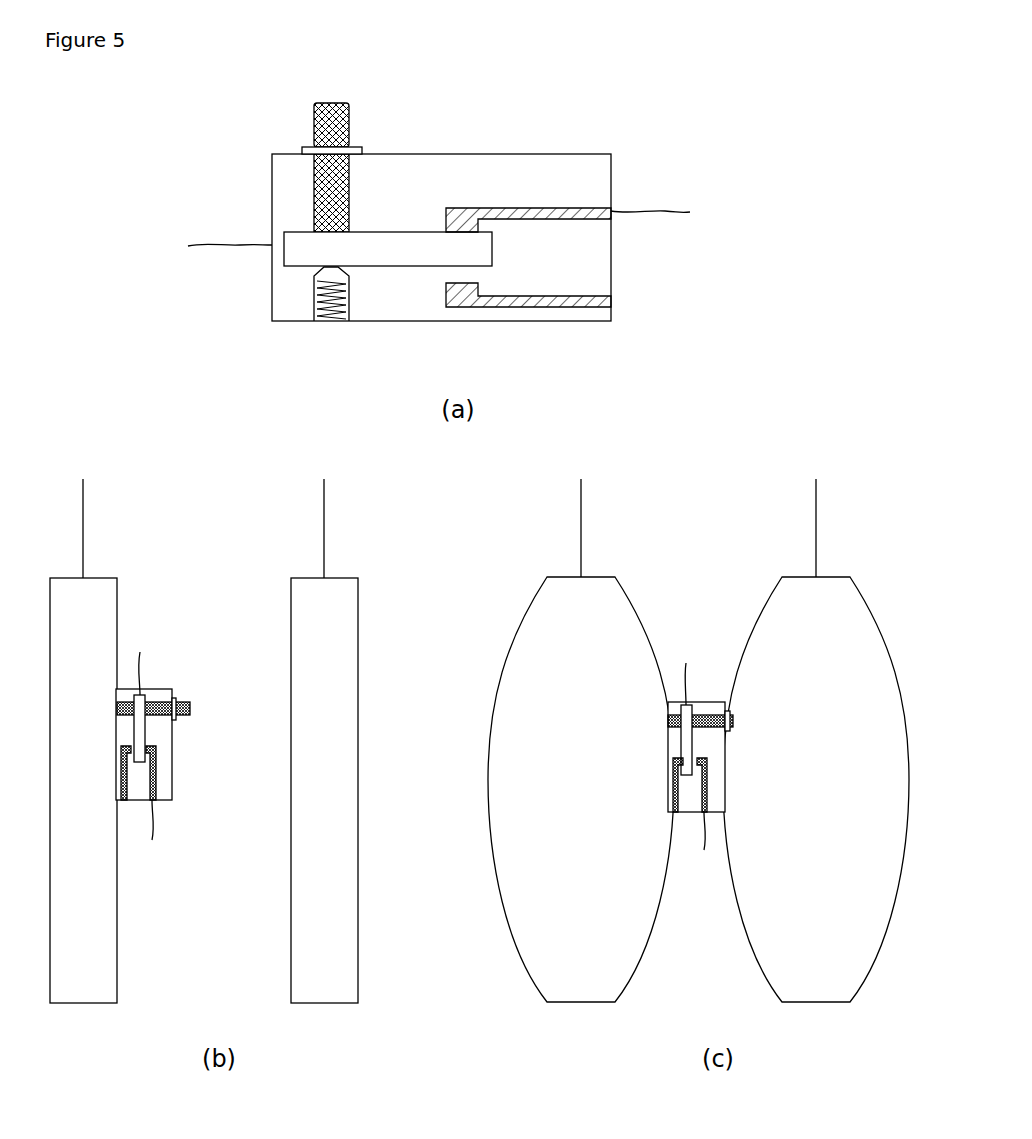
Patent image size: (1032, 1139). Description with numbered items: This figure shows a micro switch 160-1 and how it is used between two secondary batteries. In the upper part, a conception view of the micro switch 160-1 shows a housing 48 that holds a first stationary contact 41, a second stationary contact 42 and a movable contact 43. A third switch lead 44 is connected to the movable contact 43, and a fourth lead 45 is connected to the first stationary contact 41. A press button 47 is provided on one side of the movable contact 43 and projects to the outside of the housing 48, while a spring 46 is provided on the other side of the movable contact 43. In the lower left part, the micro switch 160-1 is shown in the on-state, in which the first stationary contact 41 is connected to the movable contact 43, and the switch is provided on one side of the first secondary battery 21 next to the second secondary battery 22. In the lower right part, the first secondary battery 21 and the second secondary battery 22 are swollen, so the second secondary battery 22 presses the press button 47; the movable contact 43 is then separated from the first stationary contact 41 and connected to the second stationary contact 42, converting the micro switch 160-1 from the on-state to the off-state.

The first secondary battery 21 is at (108, 578).
The second secondary battery 22 is at (348, 578).
The first stationary contact 41 is at (463, 208).
The second stationary contact 42 is at (528, 308).
The movable contact 43 is at (398, 267).
The third switch lead 44 is at (233, 250).
The fourth lead 45 is at (650, 211).
The spring 46 is at (332, 318).
The press button 47 is at (350, 116).
The housing 48 is at (500, 153).
The micro switch 160-1 is at (171, 671).